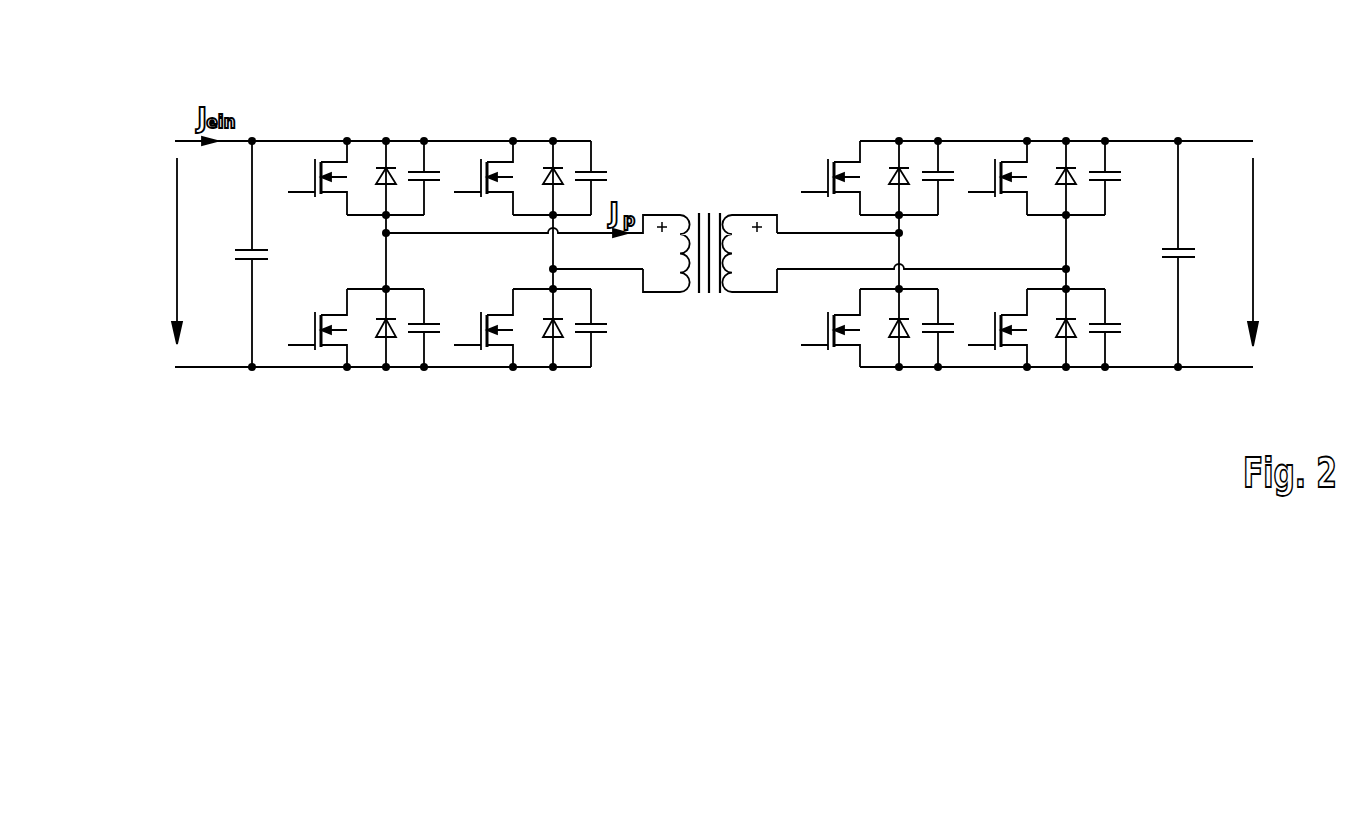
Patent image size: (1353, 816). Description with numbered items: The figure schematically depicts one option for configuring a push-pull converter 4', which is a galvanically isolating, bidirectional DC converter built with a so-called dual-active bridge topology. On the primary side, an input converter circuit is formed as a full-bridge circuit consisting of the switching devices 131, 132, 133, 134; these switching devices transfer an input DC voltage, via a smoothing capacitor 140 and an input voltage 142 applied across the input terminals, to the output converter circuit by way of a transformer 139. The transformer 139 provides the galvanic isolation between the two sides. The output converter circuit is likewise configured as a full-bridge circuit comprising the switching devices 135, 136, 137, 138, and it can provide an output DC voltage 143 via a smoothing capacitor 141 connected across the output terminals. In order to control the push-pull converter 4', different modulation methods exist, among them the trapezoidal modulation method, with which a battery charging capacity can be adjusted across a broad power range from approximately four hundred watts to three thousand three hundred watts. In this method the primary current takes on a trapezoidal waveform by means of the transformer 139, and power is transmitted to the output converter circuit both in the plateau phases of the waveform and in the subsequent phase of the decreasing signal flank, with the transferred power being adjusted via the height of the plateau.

The push-pull converter 4' is at (107, 102).
The switching device 131 is at (323, 162).
The switching device 132 is at (490, 162).
The switching device 133 is at (323, 347).
The switching device 134 is at (490, 347).
The switching device 135 is at (836, 162).
The switching device 136 is at (1003, 162).
The switching device 137 is at (838, 347).
The switching device 138 is at (1004, 347).
The transformer 139 is at (710, 216).
The input capacitor 140 is at (242, 250).
The smoothing capacitor 141 is at (1188, 249).
The input voltage 142 is at (177, 248).
The output DC voltage 143 is at (1253, 248).